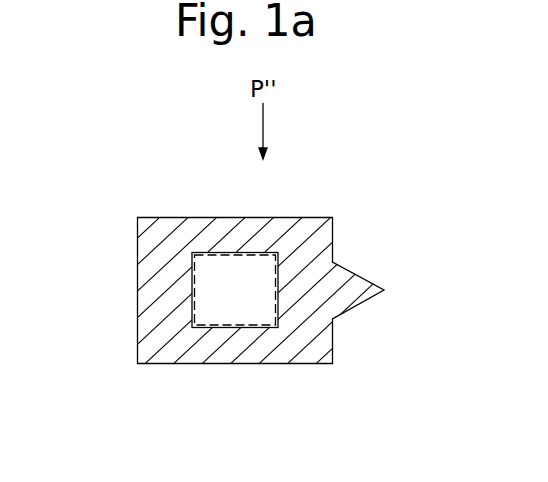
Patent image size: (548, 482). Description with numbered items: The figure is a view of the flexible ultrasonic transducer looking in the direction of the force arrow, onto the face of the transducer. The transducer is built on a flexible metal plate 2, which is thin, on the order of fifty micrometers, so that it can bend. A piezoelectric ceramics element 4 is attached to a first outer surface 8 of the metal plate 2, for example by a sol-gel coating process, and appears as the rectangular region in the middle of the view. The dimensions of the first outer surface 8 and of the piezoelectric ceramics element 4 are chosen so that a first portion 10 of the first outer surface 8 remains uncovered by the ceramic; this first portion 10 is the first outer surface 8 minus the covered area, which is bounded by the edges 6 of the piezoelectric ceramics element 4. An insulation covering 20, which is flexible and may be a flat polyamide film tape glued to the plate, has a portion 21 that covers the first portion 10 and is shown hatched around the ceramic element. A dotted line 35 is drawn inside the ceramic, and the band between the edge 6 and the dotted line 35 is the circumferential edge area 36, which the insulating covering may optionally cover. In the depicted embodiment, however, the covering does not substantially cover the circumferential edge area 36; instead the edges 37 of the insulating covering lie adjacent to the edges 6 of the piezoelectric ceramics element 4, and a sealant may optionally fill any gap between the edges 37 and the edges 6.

The flexible metal plate 2 is at (310, 326).
The piezoelectric ceramics element 4 is at (248, 272).
The edges of the piezoelectric ceramics element 6 is at (270, 252).
The first outer surface 8 is at (320, 222).
The first portion of the first outer surface 10 is at (146, 358).
The insulation covering 20 is at (140, 237).
The portion of the insulation covering 21 is at (268, 292).
The dotted line 35 is at (191, 306).
The circumferential edge area 36 is at (199, 252).
The edges of the insulating covering 37 is at (195, 330).